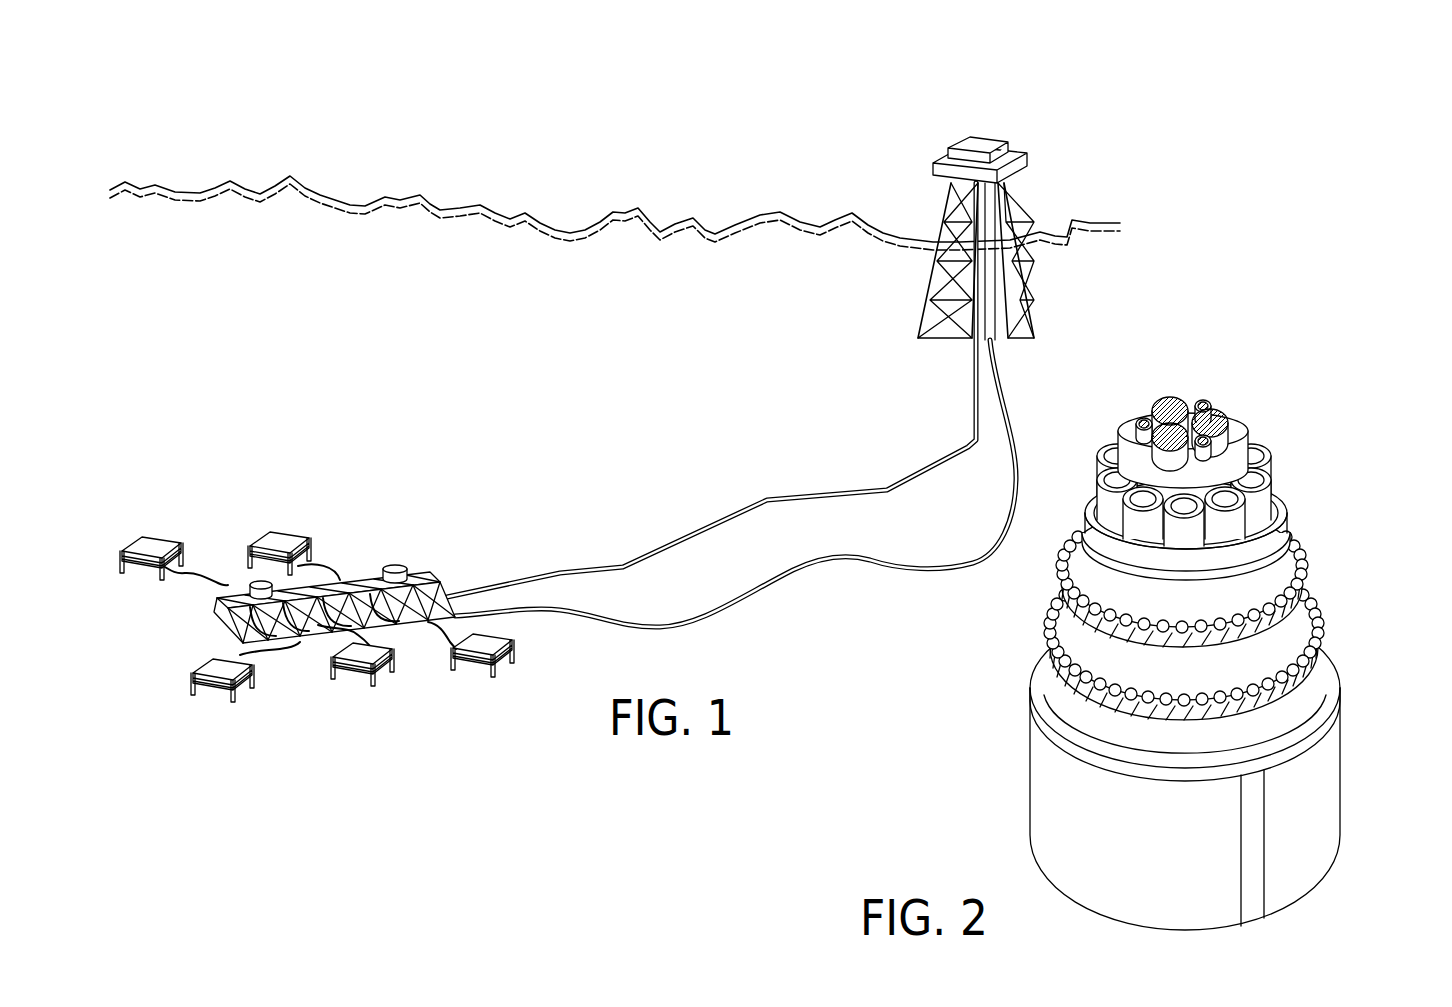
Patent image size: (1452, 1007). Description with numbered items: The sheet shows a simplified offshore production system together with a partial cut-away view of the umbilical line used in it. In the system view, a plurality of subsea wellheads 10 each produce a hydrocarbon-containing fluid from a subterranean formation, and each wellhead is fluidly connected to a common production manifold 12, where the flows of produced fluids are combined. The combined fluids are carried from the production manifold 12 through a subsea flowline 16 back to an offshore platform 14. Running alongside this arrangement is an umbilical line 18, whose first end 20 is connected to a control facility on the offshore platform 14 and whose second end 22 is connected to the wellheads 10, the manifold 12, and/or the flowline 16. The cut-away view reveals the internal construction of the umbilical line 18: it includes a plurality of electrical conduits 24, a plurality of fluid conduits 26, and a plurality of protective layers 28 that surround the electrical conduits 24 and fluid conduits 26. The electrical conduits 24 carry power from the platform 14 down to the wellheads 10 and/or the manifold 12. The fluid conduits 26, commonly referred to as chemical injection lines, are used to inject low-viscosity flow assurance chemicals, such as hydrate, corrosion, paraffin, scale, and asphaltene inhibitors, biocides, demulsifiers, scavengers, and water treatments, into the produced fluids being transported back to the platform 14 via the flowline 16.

In FIG. 1, the subsea wellhead 10 is at (168, 537).
In FIG. 1, the production manifold 12 is at (420, 572).
In FIG. 1, the offshore platform 14 is at (999, 136).
In FIG. 1, the subsea flowline 16 is at (677, 538).
In FIG. 1, the umbilical line 18 is at (752, 592).
In FIG. 2, the umbilical line 18 is at (1028, 743).
In FIG. 1, the first end 20 is at (1010, 200).
In FIG. 1, the second end 22 is at (455, 615).
In FIG. 2, the electrical conduits 24 is at (1143, 418).
In FIG. 2, the fluid conduits 26 is at (1103, 442).
In FIG. 2, the protective layers 28 is at (1290, 515).